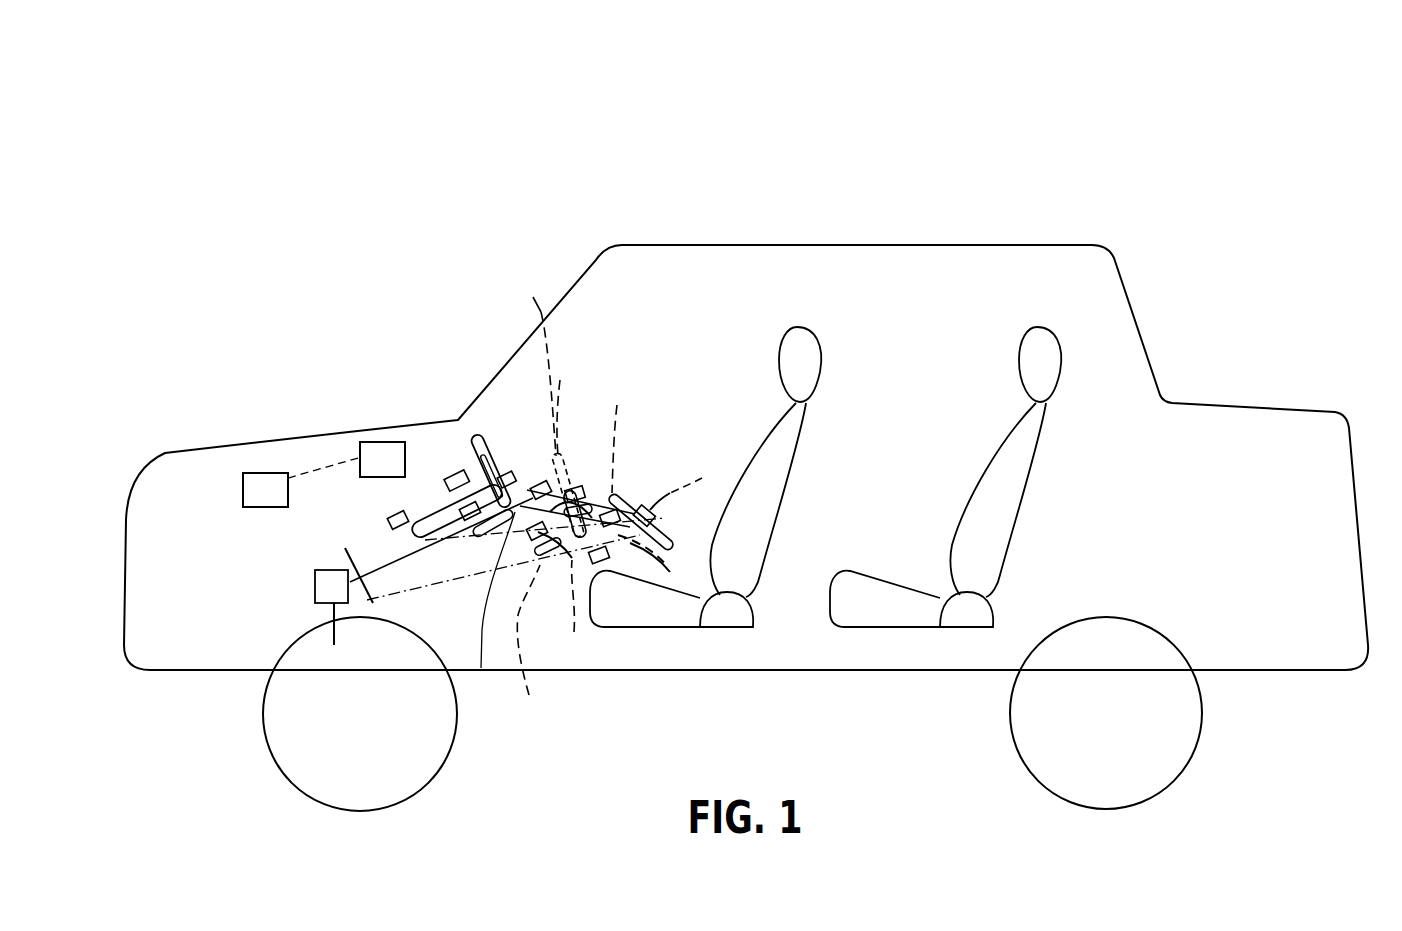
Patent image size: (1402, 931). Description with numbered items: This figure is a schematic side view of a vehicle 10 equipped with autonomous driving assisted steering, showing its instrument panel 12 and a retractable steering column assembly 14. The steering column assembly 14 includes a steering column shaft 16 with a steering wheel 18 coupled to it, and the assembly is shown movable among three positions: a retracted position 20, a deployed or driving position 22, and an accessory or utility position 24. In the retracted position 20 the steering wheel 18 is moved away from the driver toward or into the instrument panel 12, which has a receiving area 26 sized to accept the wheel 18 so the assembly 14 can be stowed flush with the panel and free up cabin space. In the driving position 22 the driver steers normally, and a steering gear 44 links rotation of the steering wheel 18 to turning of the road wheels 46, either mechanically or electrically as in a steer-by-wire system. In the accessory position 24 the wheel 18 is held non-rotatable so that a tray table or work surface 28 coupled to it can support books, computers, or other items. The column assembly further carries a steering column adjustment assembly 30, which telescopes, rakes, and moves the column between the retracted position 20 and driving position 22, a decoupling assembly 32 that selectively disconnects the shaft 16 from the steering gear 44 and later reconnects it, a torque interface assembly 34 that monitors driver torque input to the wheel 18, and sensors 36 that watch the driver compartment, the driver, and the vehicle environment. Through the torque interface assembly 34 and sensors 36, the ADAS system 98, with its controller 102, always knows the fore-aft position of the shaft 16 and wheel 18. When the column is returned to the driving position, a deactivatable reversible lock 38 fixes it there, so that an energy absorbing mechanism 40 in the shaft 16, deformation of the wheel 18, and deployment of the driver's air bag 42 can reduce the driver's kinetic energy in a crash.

The vehicle 10 is at (1143, 174).
The instrument panel 12 is at (447, 418).
The retractable steering column assembly 14 is at (412, 500).
The steering column shaft 16 is at (388, 535).
The steering wheel 18 is at (510, 463).
The retracted position 20 is at (488, 426).
The driving position 22 is at (564, 436).
The accessory position 24 is at (637, 499).
The receiving area 26 is at (467, 450).
The work surface 28 is at (702, 478).
The steering column adjustment assembly 30 is at (393, 512).
The decoupling assembly 32 is at (447, 483).
The torque interface assembly 34 is at (531, 360).
The sensors 36 is at (509, 472).
The reversible lock 38 is at (578, 613).
The energy absorbing mechanism 40 is at (429, 527).
The air bag 42 is at (660, 571).
The steering gear 44 is at (315, 588).
The road wheels 46 is at (272, 758).
The ADAS system 98 is at (382, 441).
The controller 102 is at (258, 471).